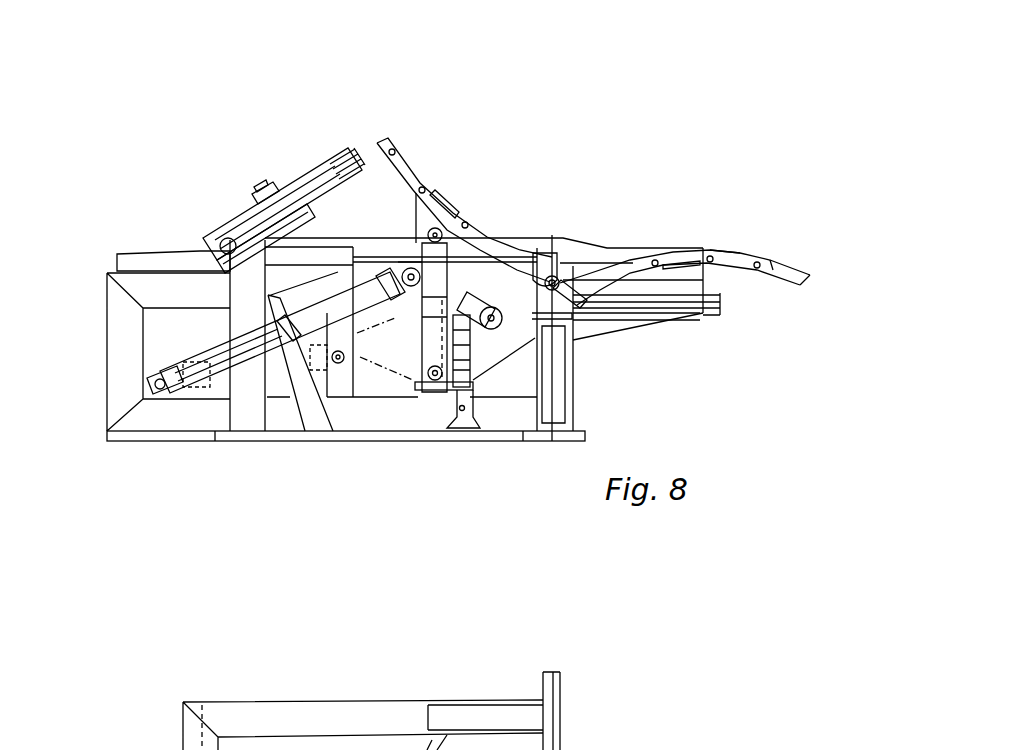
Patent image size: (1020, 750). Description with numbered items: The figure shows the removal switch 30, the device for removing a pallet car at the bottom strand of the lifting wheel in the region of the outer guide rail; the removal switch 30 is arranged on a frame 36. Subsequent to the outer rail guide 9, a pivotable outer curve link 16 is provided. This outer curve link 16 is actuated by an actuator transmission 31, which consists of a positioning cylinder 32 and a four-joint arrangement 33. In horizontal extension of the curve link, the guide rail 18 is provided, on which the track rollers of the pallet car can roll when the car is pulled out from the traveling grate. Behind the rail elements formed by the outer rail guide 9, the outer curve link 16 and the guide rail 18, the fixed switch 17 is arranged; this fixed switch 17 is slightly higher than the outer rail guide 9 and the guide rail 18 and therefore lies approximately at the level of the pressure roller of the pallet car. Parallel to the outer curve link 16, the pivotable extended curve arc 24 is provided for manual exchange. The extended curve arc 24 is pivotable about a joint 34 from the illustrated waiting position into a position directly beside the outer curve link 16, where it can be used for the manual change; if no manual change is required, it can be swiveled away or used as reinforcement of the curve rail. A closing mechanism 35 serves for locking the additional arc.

The removal switch 30 is at (612, 100).
The frame 36 is at (120, 340).
The guide rail 18 is at (143, 262).
The closing mechanism 35 is at (308, 172).
The positioning cylinder 32 is at (310, 316).
The four-joint arrangement 33 is at (407, 247).
The actuator transmission 31 is at (392, 378).
The outer curve link 16 is at (402, 164).
The fixed switch 17 is at (552, 235).
The outer rail guide 9 is at (637, 253).
The extended curve arc 24 is at (740, 257).
The joint 34 is at (570, 327).